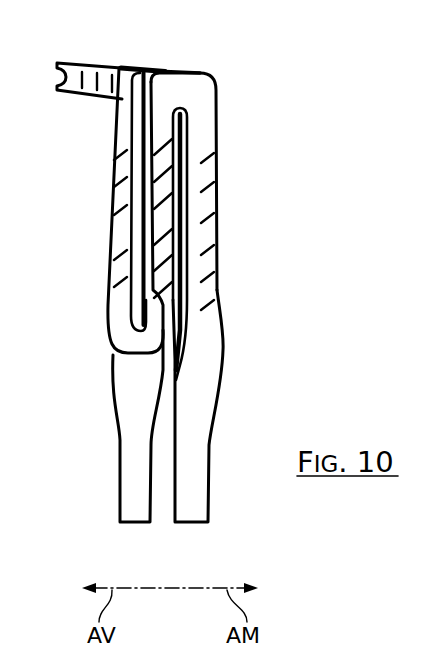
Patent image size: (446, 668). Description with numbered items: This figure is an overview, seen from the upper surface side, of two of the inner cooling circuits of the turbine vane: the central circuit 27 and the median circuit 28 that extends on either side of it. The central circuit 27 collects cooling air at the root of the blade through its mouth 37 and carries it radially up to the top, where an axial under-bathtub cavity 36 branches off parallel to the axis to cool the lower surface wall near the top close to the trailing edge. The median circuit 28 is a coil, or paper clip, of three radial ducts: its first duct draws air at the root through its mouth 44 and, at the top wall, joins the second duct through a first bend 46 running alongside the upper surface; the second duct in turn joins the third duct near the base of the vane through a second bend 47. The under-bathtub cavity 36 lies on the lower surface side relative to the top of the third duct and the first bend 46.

The central circuit 27 is at (200, 47).
The median circuit 28 is at (141, 47).
The under-bathtub cavity 36 is at (122, 67).
The mouth 37 is at (124, 545).
The mouth 44 is at (200, 545).
The first bend 46 is at (192, 97).
The second bend 47 is at (122, 328).